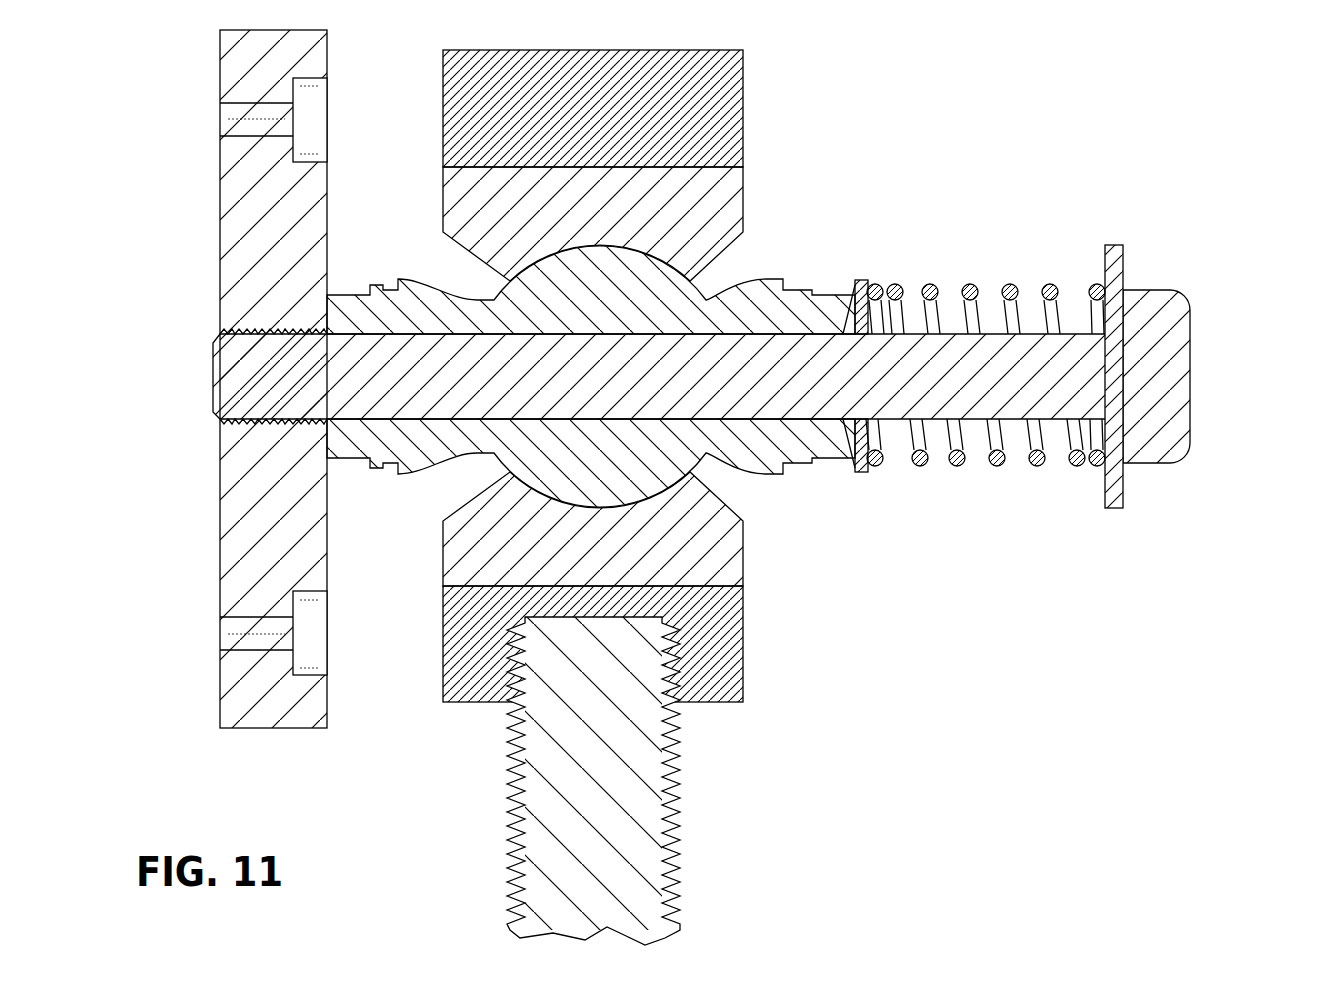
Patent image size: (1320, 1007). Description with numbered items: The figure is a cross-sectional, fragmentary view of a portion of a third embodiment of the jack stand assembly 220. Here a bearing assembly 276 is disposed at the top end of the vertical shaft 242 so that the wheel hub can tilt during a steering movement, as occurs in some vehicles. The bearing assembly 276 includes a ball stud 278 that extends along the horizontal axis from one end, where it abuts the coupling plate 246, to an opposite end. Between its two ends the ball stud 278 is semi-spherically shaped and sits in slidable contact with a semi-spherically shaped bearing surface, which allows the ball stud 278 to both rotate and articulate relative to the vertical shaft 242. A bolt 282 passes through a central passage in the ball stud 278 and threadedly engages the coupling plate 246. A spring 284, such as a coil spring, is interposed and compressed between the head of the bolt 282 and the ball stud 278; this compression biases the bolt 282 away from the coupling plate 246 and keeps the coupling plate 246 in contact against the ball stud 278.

The jack stand assembly 220 is at (840, 795).
The vertical shaft 242 is at (552, 800).
The coupling plate 246 is at (252, 250).
The bearing assembly 276 is at (768, 222).
The ball stud 278 is at (652, 462).
The bolt 282 is at (1176, 370).
The spring 284 is at (1040, 472).